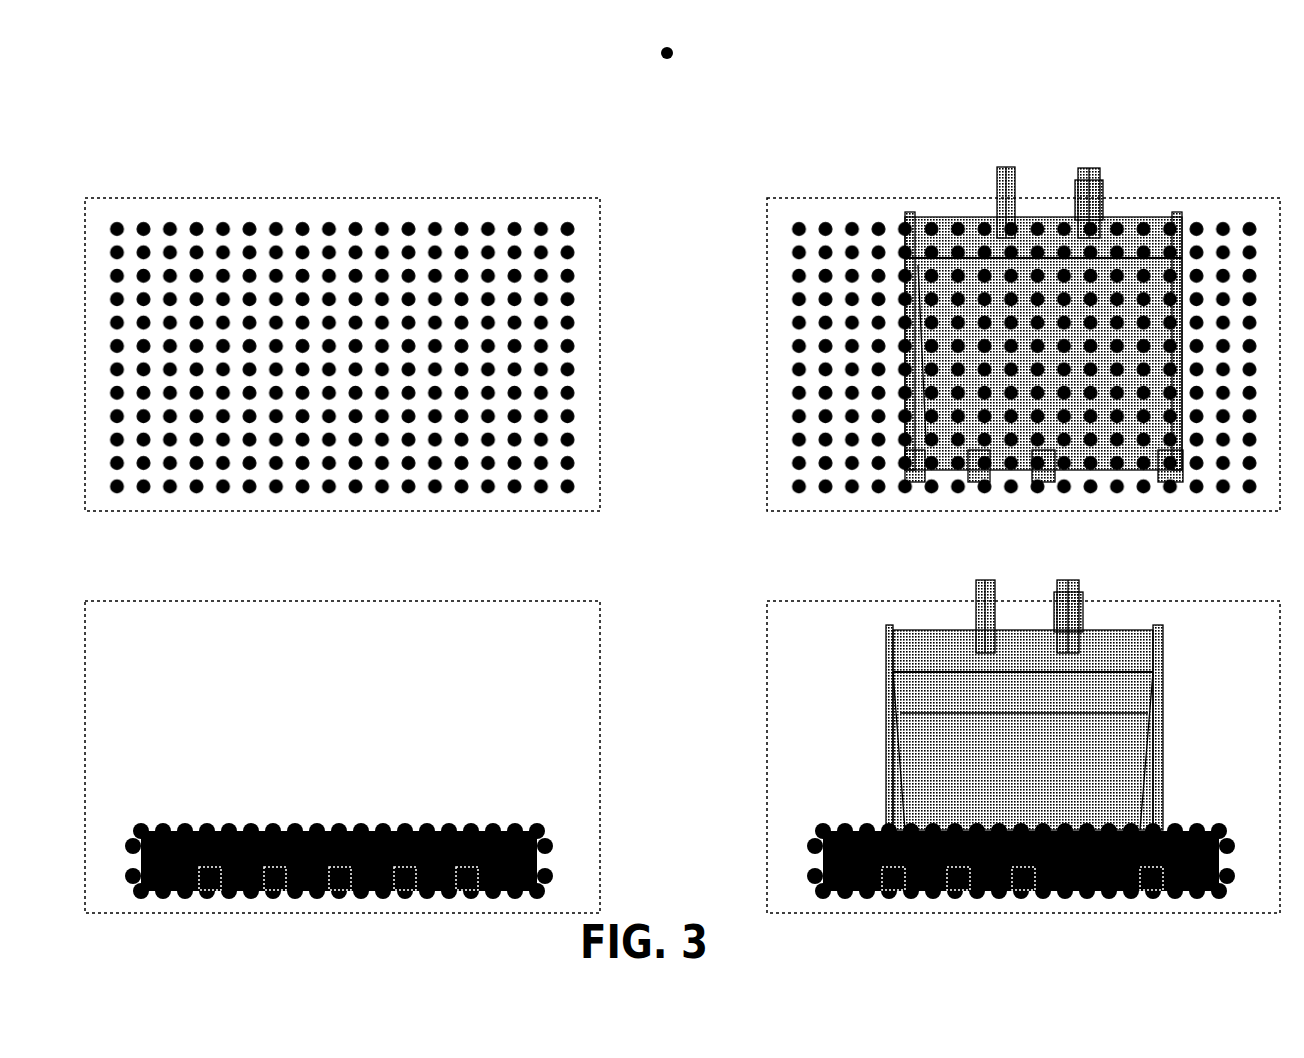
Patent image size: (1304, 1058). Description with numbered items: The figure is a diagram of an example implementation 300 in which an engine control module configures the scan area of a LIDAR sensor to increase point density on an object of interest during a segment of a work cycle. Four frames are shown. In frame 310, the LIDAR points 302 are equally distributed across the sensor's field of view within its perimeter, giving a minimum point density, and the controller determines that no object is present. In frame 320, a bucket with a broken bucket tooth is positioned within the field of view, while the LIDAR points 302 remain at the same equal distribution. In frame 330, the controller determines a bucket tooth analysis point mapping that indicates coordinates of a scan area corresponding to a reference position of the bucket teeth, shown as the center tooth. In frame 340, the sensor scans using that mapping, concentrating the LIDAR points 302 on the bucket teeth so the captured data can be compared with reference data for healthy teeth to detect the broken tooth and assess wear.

The example implementation 300 is at (130, 64).
The LIDAR points 302 is at (673, 53).
The frame 310 is at (68, 363).
The frame 320 is at (757, 358).
The frame 330 is at (68, 775).
The frame 340 is at (757, 768).